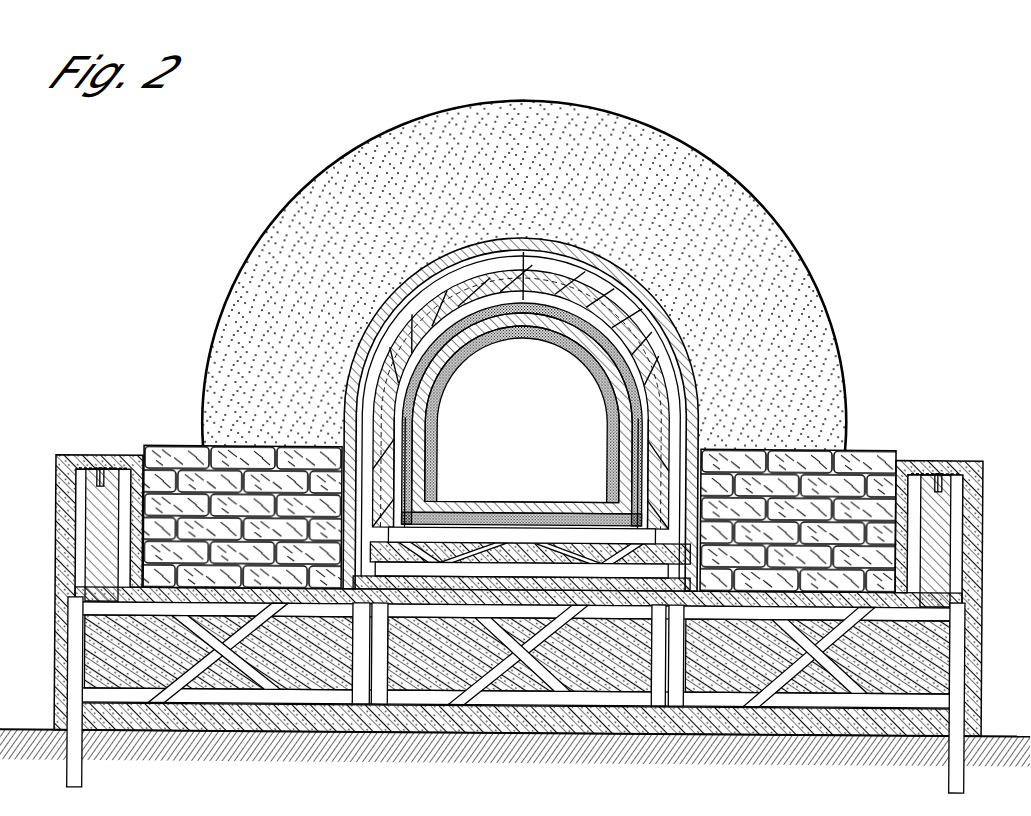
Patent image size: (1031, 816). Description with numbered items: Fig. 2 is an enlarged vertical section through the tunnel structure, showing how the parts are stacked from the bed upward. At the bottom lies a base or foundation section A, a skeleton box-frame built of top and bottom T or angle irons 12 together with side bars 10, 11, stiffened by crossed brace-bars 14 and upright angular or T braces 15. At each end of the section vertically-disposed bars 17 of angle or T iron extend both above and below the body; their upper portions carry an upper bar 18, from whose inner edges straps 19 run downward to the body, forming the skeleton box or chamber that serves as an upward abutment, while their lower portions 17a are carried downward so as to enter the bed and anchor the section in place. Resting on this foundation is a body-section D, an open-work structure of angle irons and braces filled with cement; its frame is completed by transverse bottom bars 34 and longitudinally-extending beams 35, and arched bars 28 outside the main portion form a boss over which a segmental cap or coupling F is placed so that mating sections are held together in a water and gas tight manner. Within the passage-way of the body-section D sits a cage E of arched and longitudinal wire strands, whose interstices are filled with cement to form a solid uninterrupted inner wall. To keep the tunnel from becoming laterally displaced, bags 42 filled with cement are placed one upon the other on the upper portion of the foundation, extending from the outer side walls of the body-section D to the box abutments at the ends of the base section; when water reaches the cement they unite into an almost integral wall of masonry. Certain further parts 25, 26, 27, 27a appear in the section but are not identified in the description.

The side bar 10 is at (446, 626).
The side bar 11 is at (517, 711).
The top and bottom T or angle irons 12 is at (386, 752).
The brace-bars 14 is at (511, 654).
The upright angular or T braces 15 is at (354, 615).
The vertically-disposed bars 17 is at (62, 524).
The lower portions of the vertical bars 17a is at (84, 786).
The upper bar 18 is at (100, 470).
The straps 19 is at (120, 555).
The inner arch lining 25 is at (428, 426).
The arch ring 26 is at (378, 358).
The struts 27 is at (521, 272).
The bottom struts 27a is at (530, 546).
The arched bars 28 is at (650, 290).
The transverse bottom bars 34 is at (537, 535).
The longitudinally-extending beams 35 is at (521, 574).
The bags 42 is at (291, 452).
The base or foundation section A is at (516, 654).
The body-section D is at (500, 430).
The cage E is at (422, 450).
The cap or coupling F is at (207, 361).